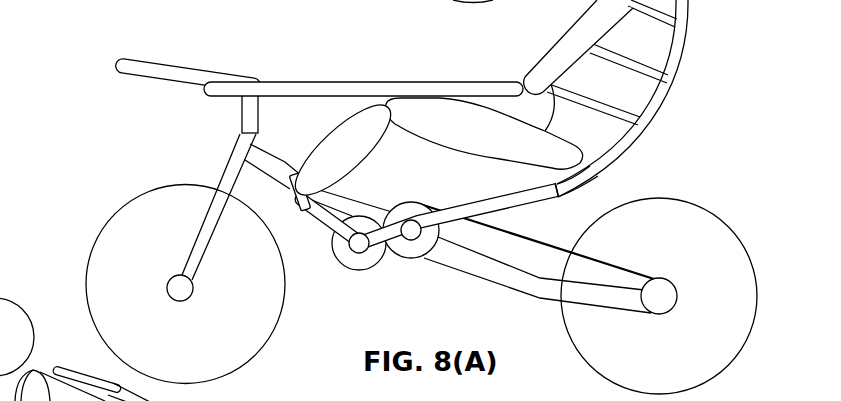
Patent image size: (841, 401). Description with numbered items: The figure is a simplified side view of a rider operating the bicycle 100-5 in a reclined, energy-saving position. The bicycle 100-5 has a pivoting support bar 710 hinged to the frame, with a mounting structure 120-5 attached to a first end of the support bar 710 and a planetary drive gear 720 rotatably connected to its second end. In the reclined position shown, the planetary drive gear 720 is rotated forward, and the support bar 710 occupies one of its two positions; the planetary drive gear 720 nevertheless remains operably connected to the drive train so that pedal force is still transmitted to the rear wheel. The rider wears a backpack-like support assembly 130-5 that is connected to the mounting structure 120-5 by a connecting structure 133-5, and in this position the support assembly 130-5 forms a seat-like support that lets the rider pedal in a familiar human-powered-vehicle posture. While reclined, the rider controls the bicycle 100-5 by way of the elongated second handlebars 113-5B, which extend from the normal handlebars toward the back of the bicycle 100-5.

The bicycle 100-5 is at (384, 200).
The second elongated handlebars 113-5B is at (367, 86).
The mounting structure 120-5 is at (540, 177).
The backpack-like support assembly 130-5 is at (679, 107).
The connecting structure 133-5 is at (583, 193).
The pivoting support bar 710 is at (450, 204).
The planetary drive gear 720 is at (355, 264).